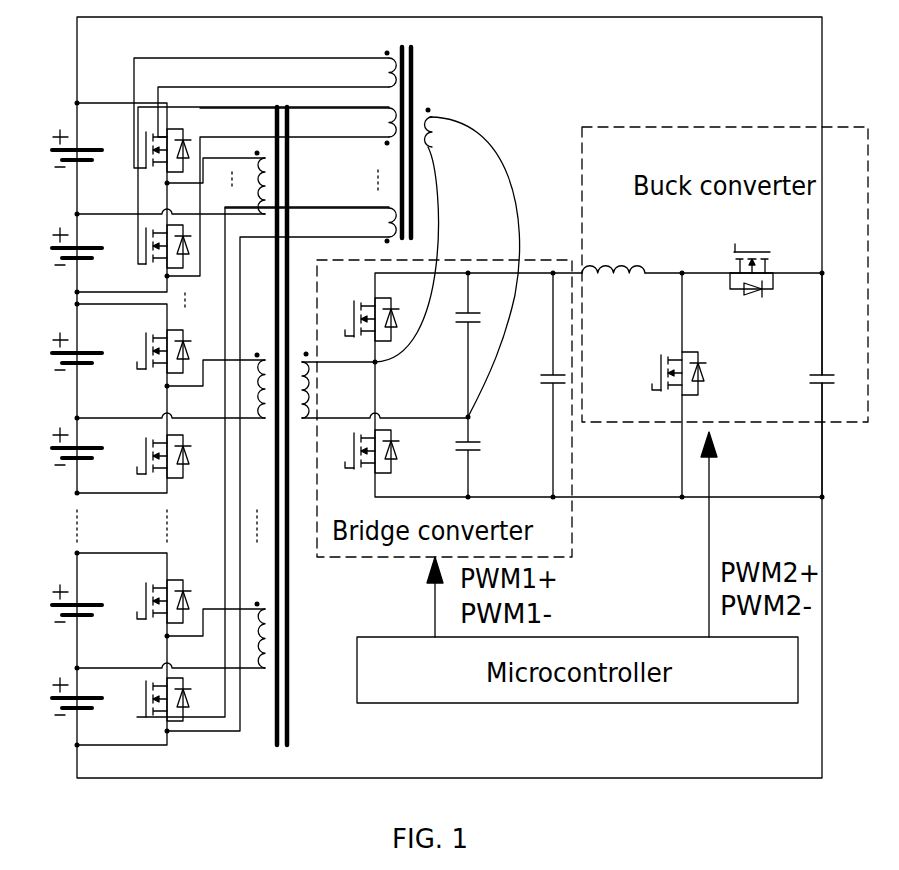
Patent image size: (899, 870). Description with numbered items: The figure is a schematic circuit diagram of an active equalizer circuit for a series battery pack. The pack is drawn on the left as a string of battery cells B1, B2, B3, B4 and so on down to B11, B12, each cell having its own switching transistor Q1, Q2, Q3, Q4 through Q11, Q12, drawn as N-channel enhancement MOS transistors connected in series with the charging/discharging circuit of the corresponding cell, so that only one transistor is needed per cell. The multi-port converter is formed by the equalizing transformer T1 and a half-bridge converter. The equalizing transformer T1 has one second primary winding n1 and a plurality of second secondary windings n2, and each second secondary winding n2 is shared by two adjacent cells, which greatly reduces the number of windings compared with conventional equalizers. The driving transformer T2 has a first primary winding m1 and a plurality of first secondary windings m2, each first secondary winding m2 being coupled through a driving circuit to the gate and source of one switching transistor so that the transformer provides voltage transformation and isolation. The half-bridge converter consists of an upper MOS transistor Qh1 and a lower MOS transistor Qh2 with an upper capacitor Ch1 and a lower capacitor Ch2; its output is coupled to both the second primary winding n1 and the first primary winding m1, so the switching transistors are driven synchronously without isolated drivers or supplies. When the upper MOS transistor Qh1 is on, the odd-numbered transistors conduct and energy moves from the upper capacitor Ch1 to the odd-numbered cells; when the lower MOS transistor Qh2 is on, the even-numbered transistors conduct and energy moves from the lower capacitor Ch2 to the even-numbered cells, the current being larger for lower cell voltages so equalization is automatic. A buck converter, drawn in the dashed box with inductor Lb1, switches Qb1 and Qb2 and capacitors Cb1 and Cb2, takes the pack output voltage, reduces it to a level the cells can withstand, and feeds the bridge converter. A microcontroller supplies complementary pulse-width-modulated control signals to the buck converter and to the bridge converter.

The battery cell B1 is at (60, 150).
The battery cell B2 is at (60, 249).
The battery cell B3 is at (60, 352).
The battery cell B4 is at (60, 449).
The battery cell B11 is at (59, 603).
The battery cell B12 is at (59, 698).
The switching transistor Q1 is at (149, 150).
The switching transistor Q2 is at (149, 246).
The switching transistor Q3 is at (151, 351).
The switching transistor Q4 is at (151, 456).
The switching transistor Q11 is at (149, 601).
The switching transistor Q12 is at (149, 699).
The second secondary winding n2 is at (254, 423).
The second primary winding n1 is at (305, 399).
The equalizing transformer T1 is at (269, 427).
The driving transformer T2 is at (419, 146).
The first secondary winding m2 is at (298, 147).
The first primary winding m1 is at (446, 129).
The upper MOS transistor Qh1 is at (358, 319).
The lower MOS transistor Qh2 is at (358, 451).
The upper capacitor Ch1 is at (455, 345).
The lower capacitor Ch2 is at (455, 457).
The bus capacitor Cb2 is at (538, 385).
The buck converter output capacitor Cb1 is at (808, 385).
The buck converter inductor Lb1 is at (613, 289).
The buck converter switch Qb1 is at (755, 260).
The buck converter switch Qb2 is at (663, 373).